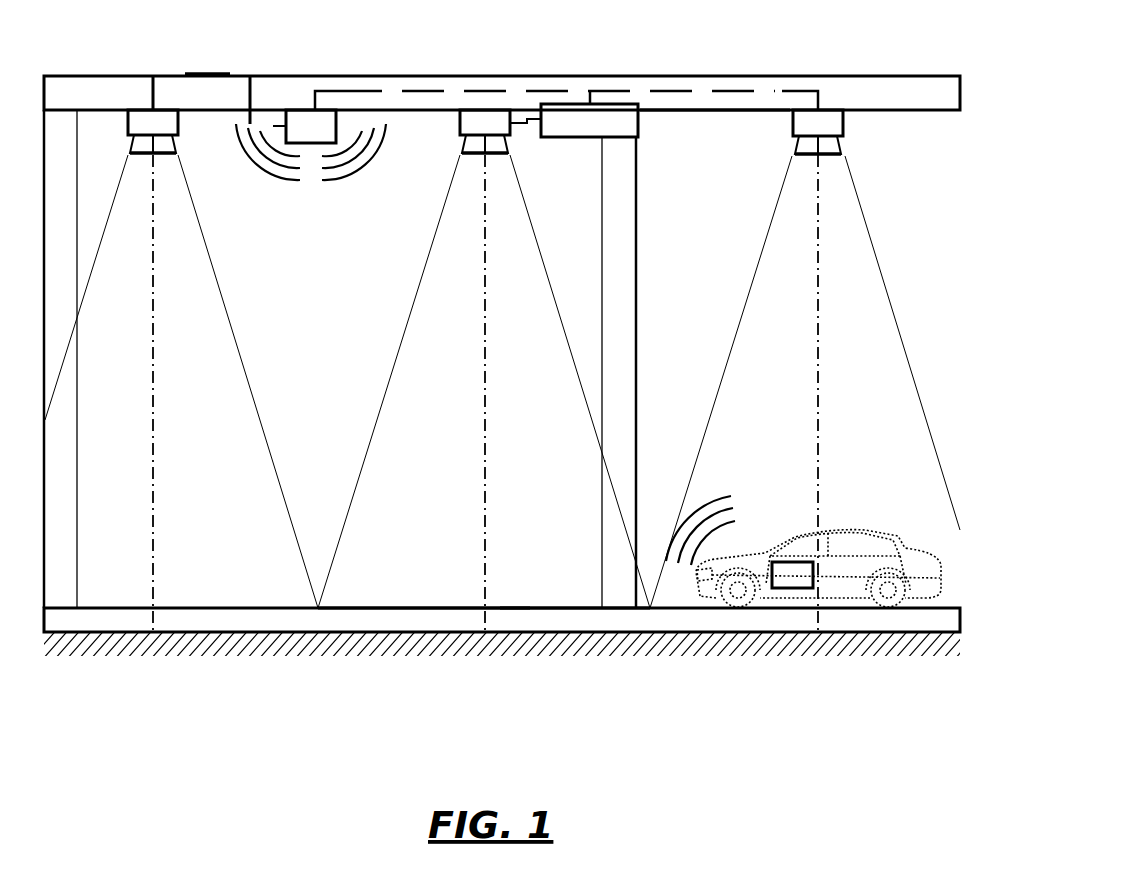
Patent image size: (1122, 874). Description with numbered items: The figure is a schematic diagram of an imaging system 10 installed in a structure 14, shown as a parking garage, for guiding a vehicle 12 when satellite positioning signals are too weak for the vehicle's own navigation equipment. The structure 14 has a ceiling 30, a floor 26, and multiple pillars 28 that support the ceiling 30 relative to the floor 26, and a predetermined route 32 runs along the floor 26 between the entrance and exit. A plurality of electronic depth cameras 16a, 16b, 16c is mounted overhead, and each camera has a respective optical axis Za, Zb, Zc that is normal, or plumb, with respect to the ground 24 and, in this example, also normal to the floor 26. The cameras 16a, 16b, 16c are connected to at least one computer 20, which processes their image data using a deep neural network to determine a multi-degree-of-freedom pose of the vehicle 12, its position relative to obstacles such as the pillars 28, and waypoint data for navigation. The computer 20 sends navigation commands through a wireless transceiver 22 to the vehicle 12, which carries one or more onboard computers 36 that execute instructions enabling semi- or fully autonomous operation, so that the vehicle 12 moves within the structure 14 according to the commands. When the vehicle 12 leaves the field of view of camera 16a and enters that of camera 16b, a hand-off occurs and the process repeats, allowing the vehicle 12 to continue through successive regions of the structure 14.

The imaging system 10 is at (688, 214).
The vehicle 12 is at (856, 524).
The structure 14 is at (908, 74).
The electronic depth camera 16a is at (848, 127).
The electronic depth camera 16b is at (457, 128).
The electronic depth camera 16c is at (126, 125).
The computer 20 is at (574, 120).
The wireless transceiver 22 is at (311, 145).
The ground 24 is at (203, 630).
The floor 26 is at (380, 607).
The pillar 28 is at (340, 359).
The ceiling 30 is at (697, 112).
The predetermined route 32 is at (515, 604).
The computer 36 is at (793, 588).
The optical axis Za is at (818, 363).
The optical axis Zb is at (485, 363).
The optical axis Zc is at (153, 363).